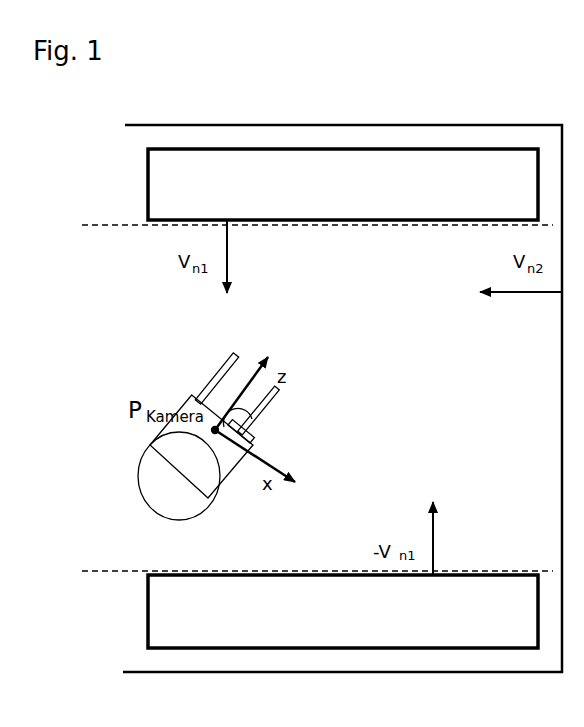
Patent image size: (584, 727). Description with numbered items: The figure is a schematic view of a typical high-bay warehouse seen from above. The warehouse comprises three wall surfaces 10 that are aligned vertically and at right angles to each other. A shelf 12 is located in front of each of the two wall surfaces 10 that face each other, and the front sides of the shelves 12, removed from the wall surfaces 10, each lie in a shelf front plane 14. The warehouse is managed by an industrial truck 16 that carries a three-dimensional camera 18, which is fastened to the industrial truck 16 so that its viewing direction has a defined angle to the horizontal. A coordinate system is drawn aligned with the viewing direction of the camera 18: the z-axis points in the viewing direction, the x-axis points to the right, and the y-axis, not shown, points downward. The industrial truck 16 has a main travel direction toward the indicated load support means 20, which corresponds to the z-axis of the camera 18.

The wall surface 10 is at (131, 126).
The shelf 12 is at (164, 207).
The shelf front plane 14 is at (135, 226).
The industrial truck 16 is at (160, 452).
The 3-D camera 18 is at (254, 414).
The load support means 20 is at (225, 367).